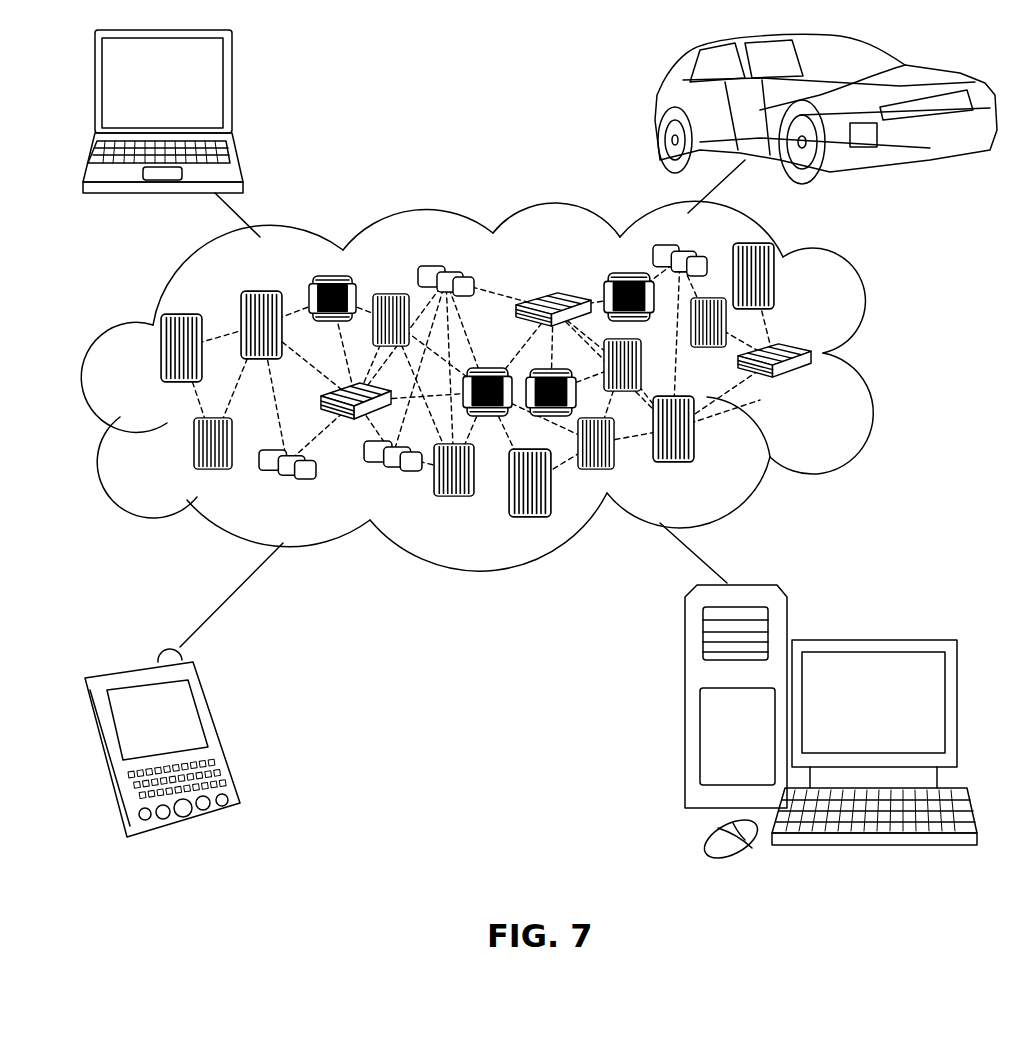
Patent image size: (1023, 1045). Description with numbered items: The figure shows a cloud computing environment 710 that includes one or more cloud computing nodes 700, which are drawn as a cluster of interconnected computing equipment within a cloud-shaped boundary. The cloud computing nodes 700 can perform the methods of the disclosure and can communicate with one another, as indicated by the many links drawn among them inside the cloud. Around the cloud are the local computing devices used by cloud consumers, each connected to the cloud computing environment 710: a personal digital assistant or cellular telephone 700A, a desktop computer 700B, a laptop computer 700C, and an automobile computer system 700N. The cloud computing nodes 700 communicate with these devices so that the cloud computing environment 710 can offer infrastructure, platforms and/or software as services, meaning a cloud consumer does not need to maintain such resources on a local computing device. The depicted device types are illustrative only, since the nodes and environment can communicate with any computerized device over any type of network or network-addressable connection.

The cloud computing nodes 700 is at (539, 448).
The cloud computing environment 710 is at (870, 362).
The personal digital assistant (PDA) or cellular telephone 700A is at (220, 732).
The desktop computer 700B is at (870, 640).
The laptop computer 700C is at (232, 88).
The automobile computer system 700N is at (657, 108).